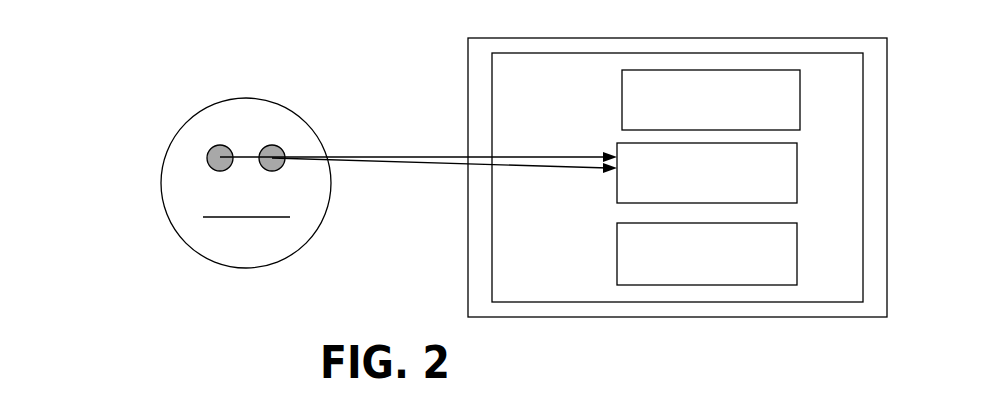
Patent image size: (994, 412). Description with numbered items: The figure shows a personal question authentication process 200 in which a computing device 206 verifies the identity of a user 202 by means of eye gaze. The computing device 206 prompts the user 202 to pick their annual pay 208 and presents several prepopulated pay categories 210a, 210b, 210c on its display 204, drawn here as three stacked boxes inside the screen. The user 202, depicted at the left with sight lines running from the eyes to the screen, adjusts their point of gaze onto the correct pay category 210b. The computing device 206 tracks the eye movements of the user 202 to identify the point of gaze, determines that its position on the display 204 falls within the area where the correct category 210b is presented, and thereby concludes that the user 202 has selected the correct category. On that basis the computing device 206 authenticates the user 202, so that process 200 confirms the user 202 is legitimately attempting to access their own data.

The personal question authentication process 200 is at (115, 116).
The user 202 is at (301, 116).
The display 204 is at (608, 88).
The computing device 206 is at (468, 87).
The annual pay 208 is at (503, 242).
The prepopulated pay category 210a is at (684, 279).
The correct pay category 210b is at (684, 197).
The prepopulated pay category 210c is at (688, 126).